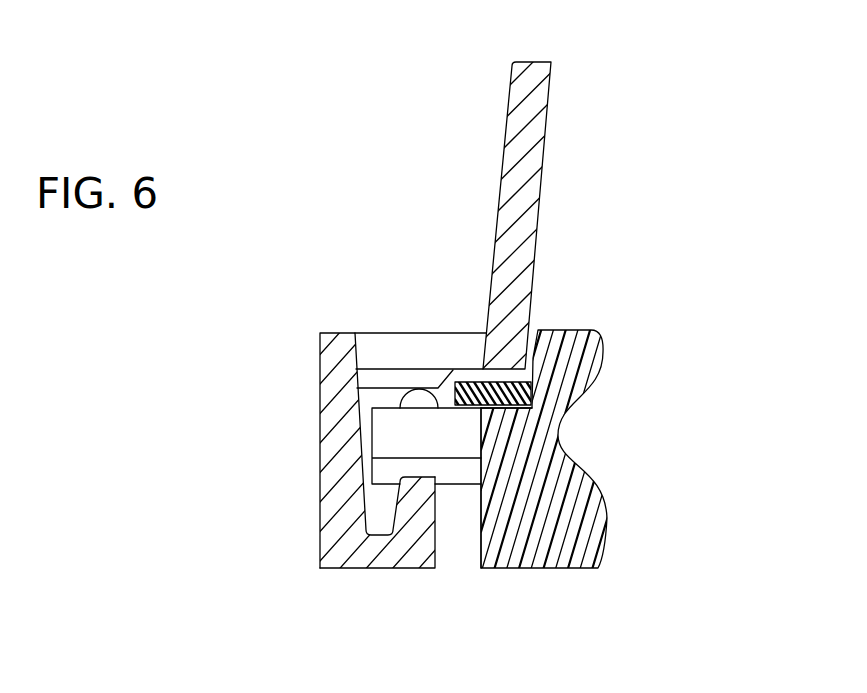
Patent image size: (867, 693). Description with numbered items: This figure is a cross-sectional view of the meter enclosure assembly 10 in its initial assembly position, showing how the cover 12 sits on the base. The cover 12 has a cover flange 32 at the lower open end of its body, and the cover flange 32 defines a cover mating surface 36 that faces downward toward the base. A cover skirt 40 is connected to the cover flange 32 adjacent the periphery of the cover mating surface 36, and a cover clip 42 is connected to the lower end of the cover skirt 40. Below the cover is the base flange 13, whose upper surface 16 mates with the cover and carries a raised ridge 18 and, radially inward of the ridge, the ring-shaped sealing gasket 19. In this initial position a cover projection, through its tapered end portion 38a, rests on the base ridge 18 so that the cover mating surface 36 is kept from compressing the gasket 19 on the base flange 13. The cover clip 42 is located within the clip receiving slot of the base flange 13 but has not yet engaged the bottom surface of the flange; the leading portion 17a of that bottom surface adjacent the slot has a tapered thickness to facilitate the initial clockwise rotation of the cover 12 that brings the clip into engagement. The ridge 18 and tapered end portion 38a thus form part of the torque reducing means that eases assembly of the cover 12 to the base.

The wiper blade assembly 10 is at (313, 138).
The cover 12 is at (505, 120).
The base flange 13 is at (542, 552).
The upper surface 16 is at (473, 426).
The leading portion 17a is at (382, 473).
The ridge 18 is at (414, 400).
The sealing gasket 19 is at (491, 404).
The cover flange 32 is at (452, 330).
The cover mating surface 36 is at (533, 398).
The tapered end portion 38a is at (392, 378).
The cover skirt 40 is at (322, 352).
The cover clip 42 is at (352, 555).